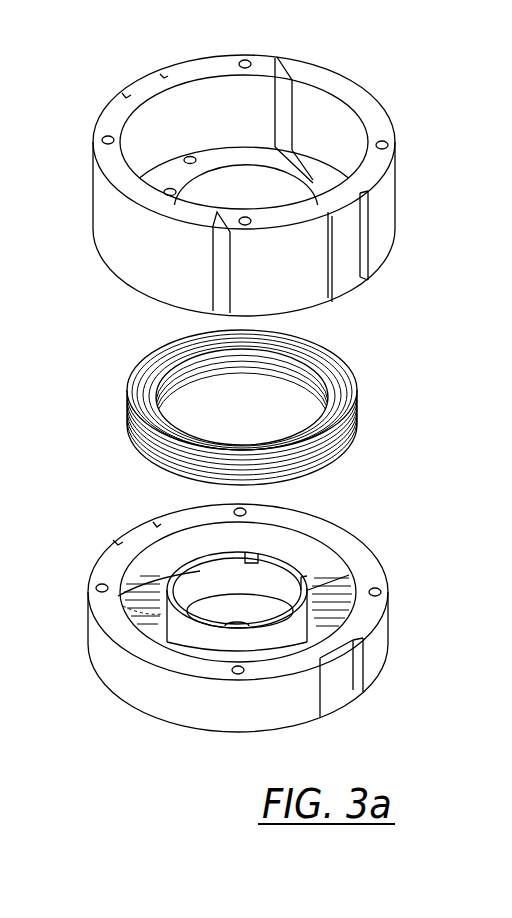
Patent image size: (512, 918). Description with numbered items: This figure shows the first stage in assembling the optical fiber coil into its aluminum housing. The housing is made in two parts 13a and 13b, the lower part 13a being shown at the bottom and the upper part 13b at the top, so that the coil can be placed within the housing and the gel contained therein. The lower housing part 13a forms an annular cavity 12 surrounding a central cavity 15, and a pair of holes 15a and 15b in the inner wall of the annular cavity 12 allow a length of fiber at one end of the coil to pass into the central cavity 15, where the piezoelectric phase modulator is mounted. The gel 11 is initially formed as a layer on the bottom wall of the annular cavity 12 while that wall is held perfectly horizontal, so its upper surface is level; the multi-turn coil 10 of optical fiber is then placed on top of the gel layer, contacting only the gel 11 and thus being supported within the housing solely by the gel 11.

The housing part 13b is at (378, 102).
The multi-turn coil 10 is at (353, 375).
The housing part 13a is at (205, 718).
The body of gel 11 is at (142, 613).
The annular cavity 12 is at (330, 572).
The central cavity 15 is at (208, 585).
The hole 15a is at (253, 555).
The hole 15b is at (310, 590).